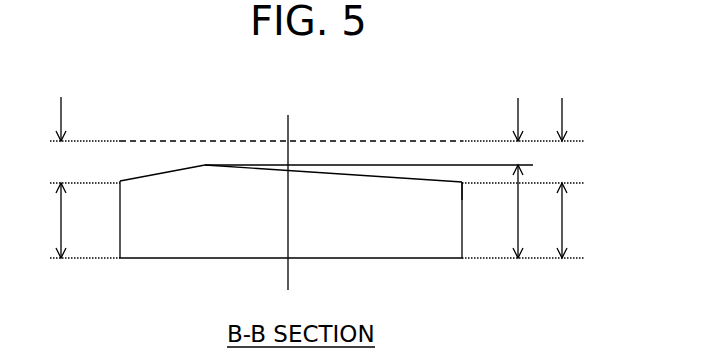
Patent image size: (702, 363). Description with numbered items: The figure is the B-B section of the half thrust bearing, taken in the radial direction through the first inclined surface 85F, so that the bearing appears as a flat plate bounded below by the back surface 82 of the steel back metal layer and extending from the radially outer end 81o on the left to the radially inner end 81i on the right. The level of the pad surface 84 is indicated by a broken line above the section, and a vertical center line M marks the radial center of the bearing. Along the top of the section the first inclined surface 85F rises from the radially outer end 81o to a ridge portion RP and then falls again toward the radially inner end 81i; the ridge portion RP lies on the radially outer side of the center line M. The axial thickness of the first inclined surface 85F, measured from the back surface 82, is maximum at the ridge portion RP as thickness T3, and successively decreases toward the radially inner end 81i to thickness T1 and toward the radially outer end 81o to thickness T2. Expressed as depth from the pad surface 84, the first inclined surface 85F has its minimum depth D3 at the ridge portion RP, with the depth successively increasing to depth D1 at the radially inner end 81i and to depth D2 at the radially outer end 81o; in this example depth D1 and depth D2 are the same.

The radially outer end 81o is at (120, 181).
The radially inner end 81i is at (462, 183).
The back surface 82 is at (390, 258).
The pad surface 84 is at (427, 141).
The first inclined surface 85F is at (352, 174).
The ridge portion RP is at (208, 164).
The center line M is at (290, 168).
The axial depth at radially inner end D1 is at (564, 135).
The axial depth at radially outer end D2 is at (60, 135).
The minimum axial depth D3 is at (519, 131).
The axial thickness toward radially inner end T1 is at (551, 220).
The axial thickness toward radially outer end T2 is at (48, 220).
The maximum axial thickness T3 is at (505, 211).